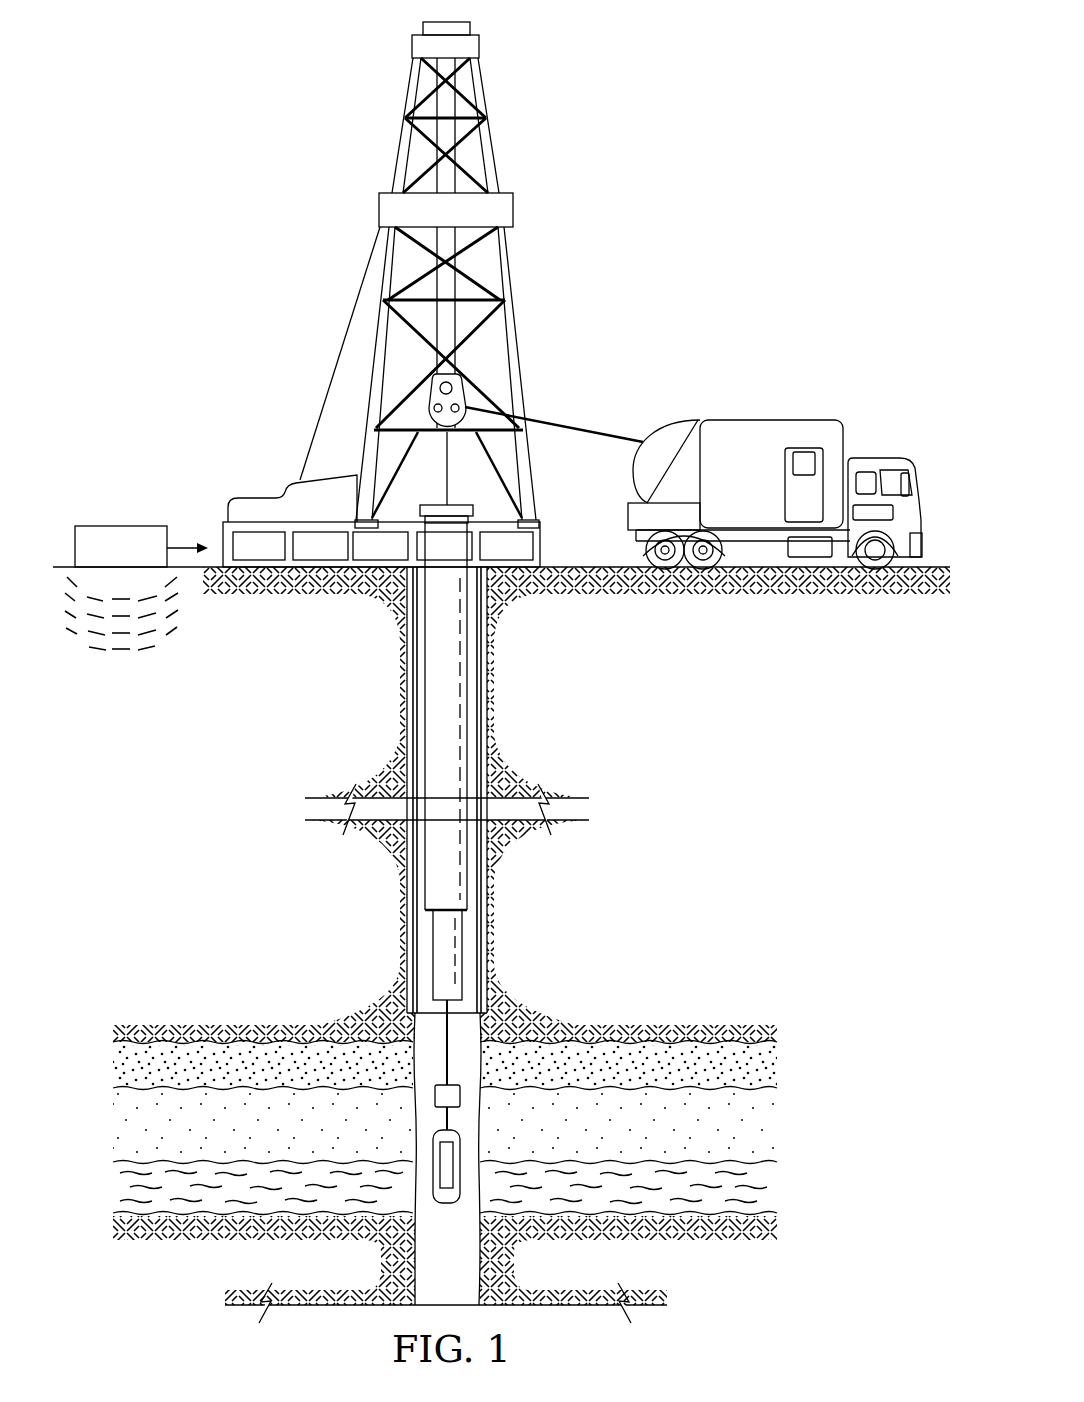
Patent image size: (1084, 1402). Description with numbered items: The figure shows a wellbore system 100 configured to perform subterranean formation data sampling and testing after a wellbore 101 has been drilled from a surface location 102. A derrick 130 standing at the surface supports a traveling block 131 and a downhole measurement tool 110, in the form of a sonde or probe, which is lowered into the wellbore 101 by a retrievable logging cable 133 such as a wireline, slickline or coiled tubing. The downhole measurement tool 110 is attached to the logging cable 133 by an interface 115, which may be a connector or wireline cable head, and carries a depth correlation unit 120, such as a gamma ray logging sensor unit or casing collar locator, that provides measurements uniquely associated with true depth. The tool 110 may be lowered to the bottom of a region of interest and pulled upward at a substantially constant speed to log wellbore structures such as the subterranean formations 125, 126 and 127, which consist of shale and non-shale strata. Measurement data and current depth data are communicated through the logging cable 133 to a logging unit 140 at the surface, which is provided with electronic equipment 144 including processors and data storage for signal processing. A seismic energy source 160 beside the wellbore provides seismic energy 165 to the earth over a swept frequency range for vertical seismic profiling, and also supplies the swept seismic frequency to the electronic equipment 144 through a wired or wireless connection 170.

The wellbore system 100 is at (501, 672).
The wellbore 101 is at (413, 1060).
The surface location 102 is at (577, 567).
The downhole measurement tool 110 is at (462, 1134).
The interface 115 is at (435, 1097).
The depth correlation unit 120 is at (462, 1176).
The subterranean formation 125 is at (790, 1068).
The subterranean formation 126 is at (790, 1130).
The subterranean formation 127 is at (790, 1202).
The derrick 130 is at (511, 280).
The traveling block 131 is at (465, 392).
The logging cable 133 is at (596, 430).
The logging unit 140 is at (737, 420).
The electronic equipment 144 is at (805, 448).
The seismic energy source 160 is at (121, 526).
The seismic energy 165 is at (96, 676).
The wired or wireless connection 170 is at (187, 545).